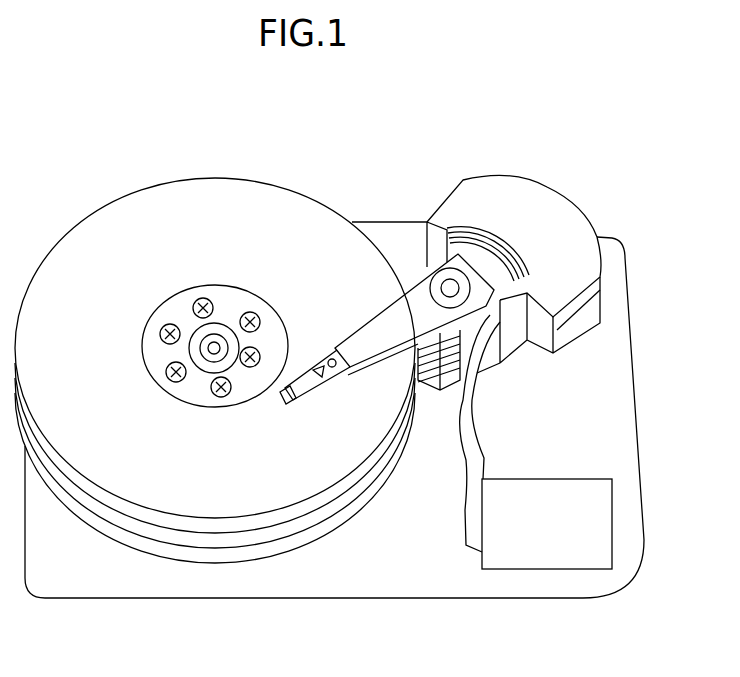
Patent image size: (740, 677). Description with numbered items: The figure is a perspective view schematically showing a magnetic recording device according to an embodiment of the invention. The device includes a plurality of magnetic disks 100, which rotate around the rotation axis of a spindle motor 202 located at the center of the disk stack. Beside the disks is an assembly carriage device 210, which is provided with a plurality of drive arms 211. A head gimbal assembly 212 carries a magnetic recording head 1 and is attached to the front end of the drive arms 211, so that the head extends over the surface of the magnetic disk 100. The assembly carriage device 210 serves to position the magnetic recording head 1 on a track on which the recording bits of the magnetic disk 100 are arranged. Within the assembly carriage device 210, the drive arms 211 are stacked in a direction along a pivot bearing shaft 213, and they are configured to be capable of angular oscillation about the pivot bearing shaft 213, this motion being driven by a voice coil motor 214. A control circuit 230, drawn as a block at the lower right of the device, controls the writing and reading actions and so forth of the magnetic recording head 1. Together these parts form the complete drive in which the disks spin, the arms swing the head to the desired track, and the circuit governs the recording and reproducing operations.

The magnetic recording head 1 is at (290, 403).
The magnetic disk 100 is at (102, 222).
The spindle motor 202 is at (216, 340).
The assembly carriage device 210 is at (543, 175).
The drive arm 211 is at (380, 323).
The head gimbal assembly 212 is at (305, 359).
The pivot bearing shaft 213 is at (450, 288).
The voice coil motor 214 is at (500, 347).
The control circuit 230 is at (552, 570).